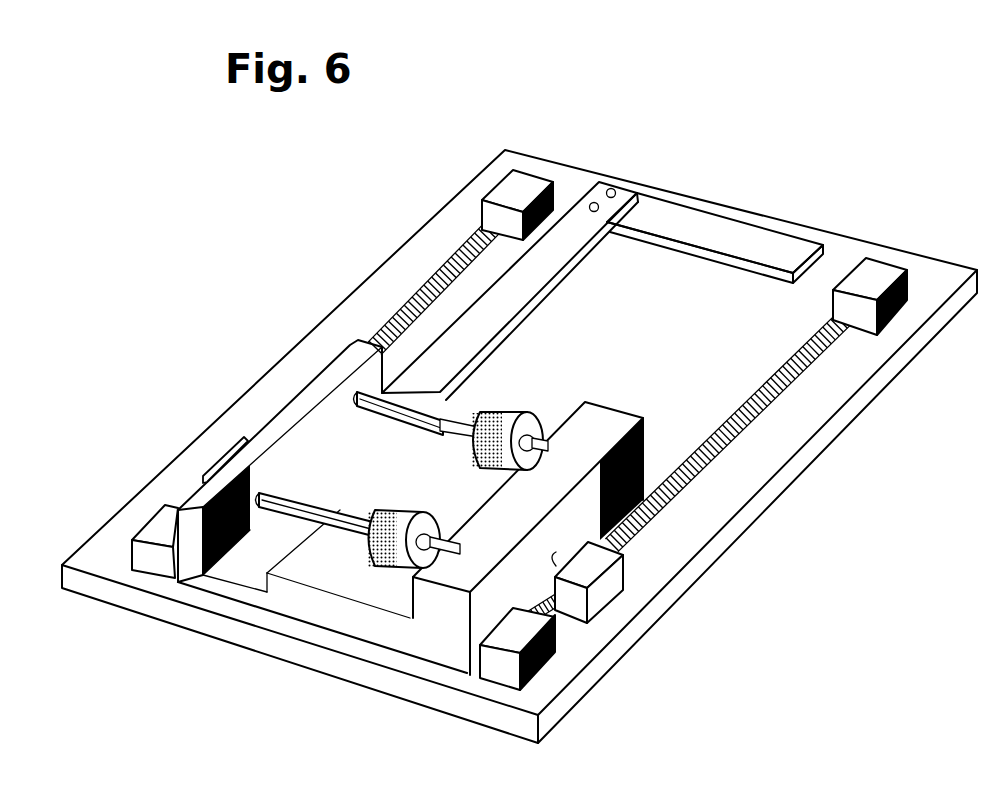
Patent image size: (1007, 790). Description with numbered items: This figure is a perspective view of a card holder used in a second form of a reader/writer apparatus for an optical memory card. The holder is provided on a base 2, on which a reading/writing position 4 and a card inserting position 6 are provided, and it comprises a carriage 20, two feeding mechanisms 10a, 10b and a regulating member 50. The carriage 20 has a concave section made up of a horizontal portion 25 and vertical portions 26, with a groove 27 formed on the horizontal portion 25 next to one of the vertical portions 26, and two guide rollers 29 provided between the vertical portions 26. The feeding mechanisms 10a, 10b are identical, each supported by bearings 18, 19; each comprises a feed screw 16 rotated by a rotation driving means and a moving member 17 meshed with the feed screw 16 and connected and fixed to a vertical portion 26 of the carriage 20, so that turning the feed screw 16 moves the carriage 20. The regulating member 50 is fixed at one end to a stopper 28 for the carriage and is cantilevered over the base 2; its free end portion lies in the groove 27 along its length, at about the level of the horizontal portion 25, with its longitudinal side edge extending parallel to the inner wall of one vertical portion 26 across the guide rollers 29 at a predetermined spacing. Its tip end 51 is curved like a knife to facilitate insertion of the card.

The base 2 is at (700, 568).
The reading/writing position 4 is at (712, 290).
The card inserting position 6 is at (243, 378).
The feeding mechanism 10a is at (436, 243).
The feeding mechanism 10b is at (818, 381).
The feed screw 16 is at (412, 296).
The moving member 17 is at (223, 457).
The bearing 18 is at (143, 525).
The bearing 19 is at (527, 182).
The carriage 20 is at (322, 365).
The horizontal portion 25 is at (440, 447).
The vertical portion 26 is at (193, 542).
The groove 27 is at (255, 565).
The stopper 28 is at (680, 214).
The guide roller 29 is at (533, 420).
The regulating member 50 is at (547, 260).
The tip end 51 is at (247, 517).